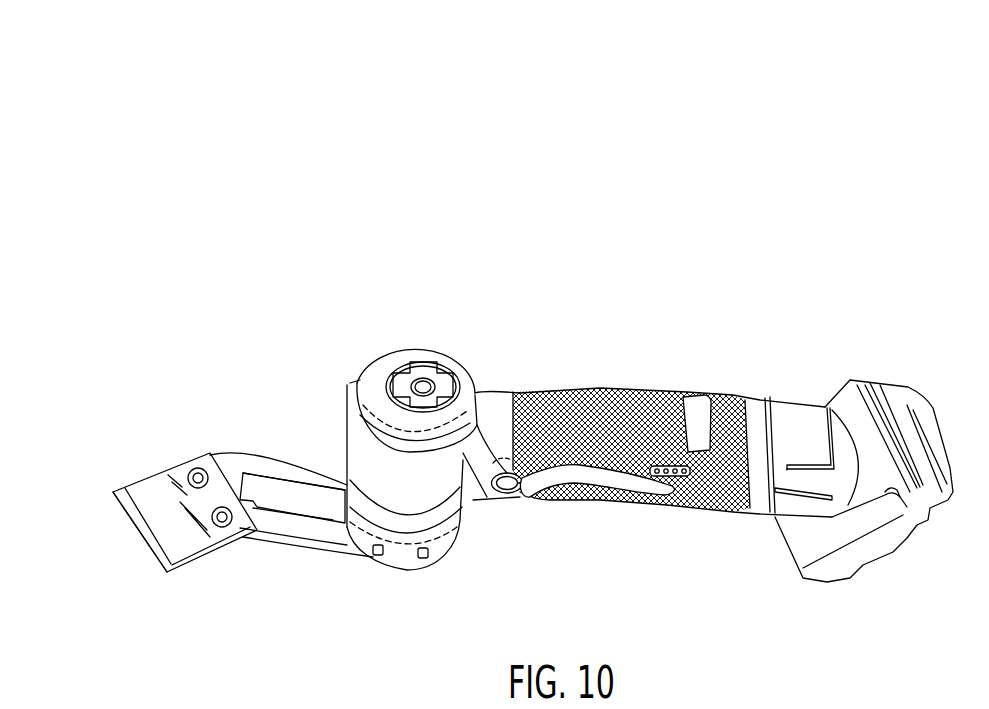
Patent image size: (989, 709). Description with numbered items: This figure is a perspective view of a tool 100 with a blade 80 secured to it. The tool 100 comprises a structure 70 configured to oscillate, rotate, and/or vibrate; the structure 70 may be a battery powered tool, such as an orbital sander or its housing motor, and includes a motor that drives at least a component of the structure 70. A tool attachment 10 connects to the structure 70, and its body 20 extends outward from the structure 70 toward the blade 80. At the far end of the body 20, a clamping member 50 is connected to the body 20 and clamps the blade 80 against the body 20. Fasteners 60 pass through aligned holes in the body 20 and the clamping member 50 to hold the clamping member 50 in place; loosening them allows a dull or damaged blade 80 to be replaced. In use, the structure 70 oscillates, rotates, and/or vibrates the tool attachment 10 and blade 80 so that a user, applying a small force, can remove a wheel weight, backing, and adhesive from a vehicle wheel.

The tool 100 is at (358, 246).
The tool attachment 10 is at (264, 580).
The body 20 is at (270, 493).
The clamping member 50 is at (157, 493).
The fastener 60 is at (198, 469).
The structure 70 is at (568, 405).
The blade 80 is at (143, 537).